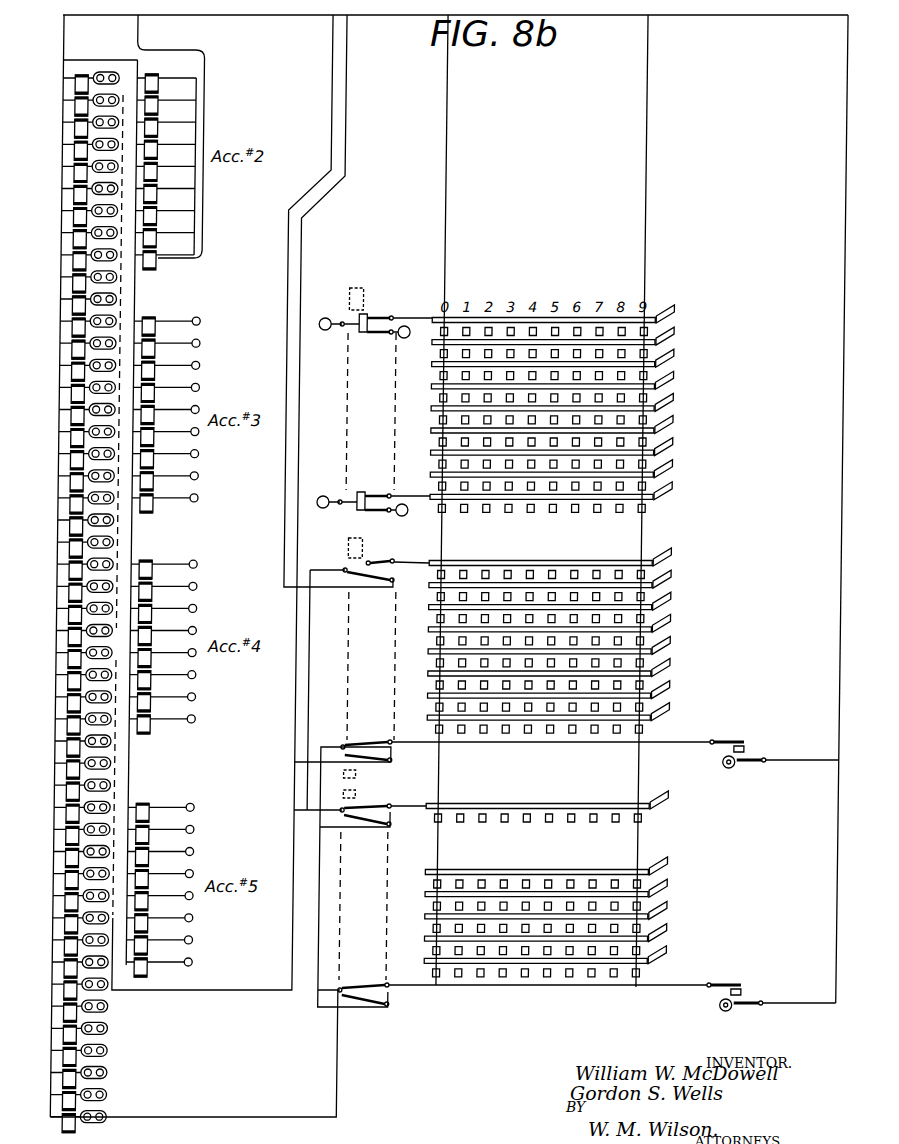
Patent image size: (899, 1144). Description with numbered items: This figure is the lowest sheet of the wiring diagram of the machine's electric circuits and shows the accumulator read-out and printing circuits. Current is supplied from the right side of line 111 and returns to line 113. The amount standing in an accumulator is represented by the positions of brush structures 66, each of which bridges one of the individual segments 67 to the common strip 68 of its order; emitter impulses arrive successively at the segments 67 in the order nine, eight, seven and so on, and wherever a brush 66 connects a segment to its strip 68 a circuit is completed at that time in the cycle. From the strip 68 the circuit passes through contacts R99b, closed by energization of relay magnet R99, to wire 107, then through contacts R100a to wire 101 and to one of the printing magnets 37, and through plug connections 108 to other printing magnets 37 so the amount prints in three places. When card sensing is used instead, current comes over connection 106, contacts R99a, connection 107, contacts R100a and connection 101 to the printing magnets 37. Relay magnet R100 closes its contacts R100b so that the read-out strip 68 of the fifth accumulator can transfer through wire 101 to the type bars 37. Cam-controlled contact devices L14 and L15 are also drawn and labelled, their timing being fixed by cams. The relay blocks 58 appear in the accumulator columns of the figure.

The printing magnet 37 is at (118, 100).
The accumulator relay block 58 is at (152, 104).
The brush structure 66 is at (567, 572).
The segment 67 is at (490, 515).
The common strip 68 is at (498, 562).
The connection 101 is at (345, 1026).
The connection 106 is at (290, 305).
The connection 107 is at (303, 703).
The plug connections 108 is at (124, 522).
The line 111 is at (847, 160).
The line 113 is at (63, 286).
The relay magnet R99 is at (368, 546).
The relay contacts R99a is at (360, 582).
The relay contacts R99b is at (384, 566).
The relay magnet R100 is at (362, 778).
The relay contacts R100a is at (358, 822).
The relay contacts R100b is at (362, 812).
The cam contacts L14 is at (760, 752).
The cam contacts L15 is at (760, 995).